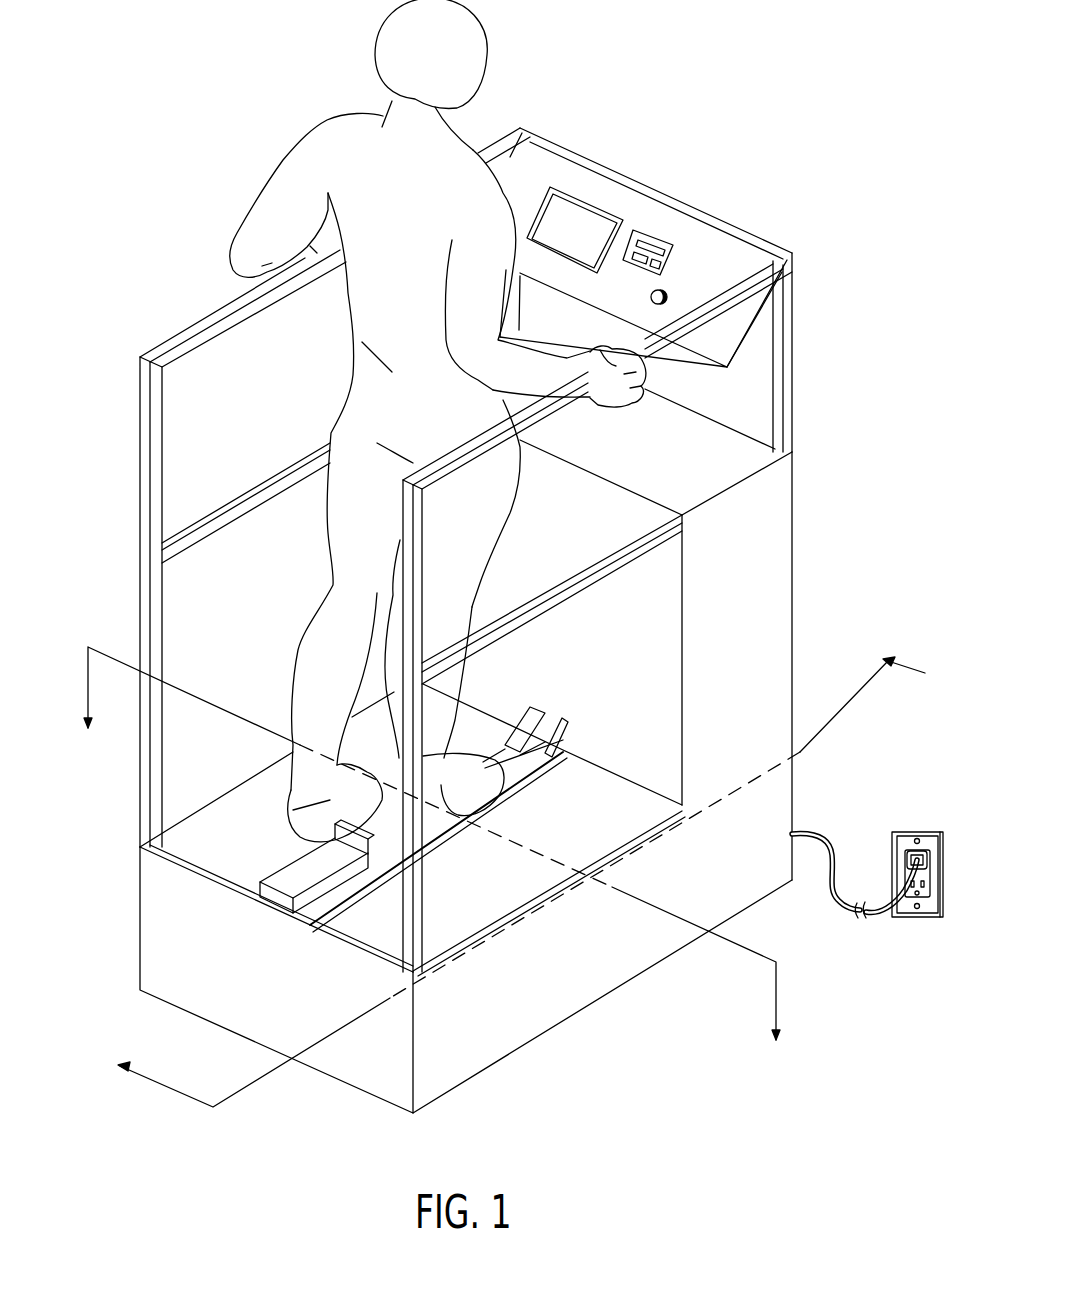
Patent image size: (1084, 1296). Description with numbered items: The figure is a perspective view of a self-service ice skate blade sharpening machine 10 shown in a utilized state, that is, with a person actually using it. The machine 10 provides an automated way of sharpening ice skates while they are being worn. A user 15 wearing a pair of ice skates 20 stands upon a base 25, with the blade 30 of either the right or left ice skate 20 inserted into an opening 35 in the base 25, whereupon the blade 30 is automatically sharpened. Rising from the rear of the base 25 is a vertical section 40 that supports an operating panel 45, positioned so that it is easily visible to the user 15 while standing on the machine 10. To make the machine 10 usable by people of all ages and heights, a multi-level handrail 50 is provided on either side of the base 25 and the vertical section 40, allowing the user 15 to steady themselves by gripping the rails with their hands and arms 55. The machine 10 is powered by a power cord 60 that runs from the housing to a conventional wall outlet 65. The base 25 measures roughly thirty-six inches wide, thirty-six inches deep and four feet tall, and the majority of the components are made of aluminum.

The self-service ice skate blade sharpening machine 10 is at (139, 164).
The user 15 is at (442, 167).
The ice skates 20 is at (317, 813).
The base 25 is at (447, 972).
The blade 30 is at (263, 892).
The opening 35 is at (297, 920).
The vertical section 40 is at (800, 760).
The operating panel 45 is at (685, 253).
The multi-level handrail 50 is at (223, 306).
The hands and arms 55 is at (483, 297).
The power cord 60 is at (836, 905).
The wall outlet 65 is at (928, 843).